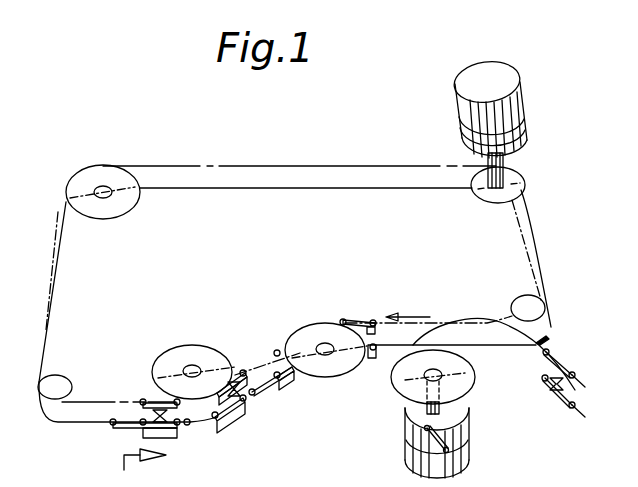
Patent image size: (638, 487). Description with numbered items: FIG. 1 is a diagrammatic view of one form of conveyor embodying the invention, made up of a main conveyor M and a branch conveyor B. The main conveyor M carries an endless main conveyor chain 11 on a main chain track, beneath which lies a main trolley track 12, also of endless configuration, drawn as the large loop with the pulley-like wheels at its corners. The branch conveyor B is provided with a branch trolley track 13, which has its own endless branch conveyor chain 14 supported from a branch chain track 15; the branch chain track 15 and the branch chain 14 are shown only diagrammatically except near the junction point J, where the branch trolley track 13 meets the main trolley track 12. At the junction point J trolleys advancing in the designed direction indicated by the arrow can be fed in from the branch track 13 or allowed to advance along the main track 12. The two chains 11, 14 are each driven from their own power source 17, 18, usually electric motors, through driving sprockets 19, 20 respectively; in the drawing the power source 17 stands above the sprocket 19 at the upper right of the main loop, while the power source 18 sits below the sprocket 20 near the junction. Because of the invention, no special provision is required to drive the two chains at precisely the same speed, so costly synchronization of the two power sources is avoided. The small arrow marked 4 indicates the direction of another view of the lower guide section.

The section view direction arrow 4 is at (131, 461).
The main conveyor chain 11 is at (541, 202).
The main trolley track 12 is at (306, 190).
The branch trolley track 13 is at (494, 356).
The branch conveyor chain 14 is at (480, 304).
The branch chain track 15 is at (549, 340).
The power source 17 is at (521, 90).
The power source 18 is at (466, 429).
The driving sprocket 19 is at (512, 176).
The driving sprocket 20 is at (470, 383).
The main conveyor M is at (547, 263).
The branch conveyor B is at (559, 378).
The junction point J is at (489, 350).